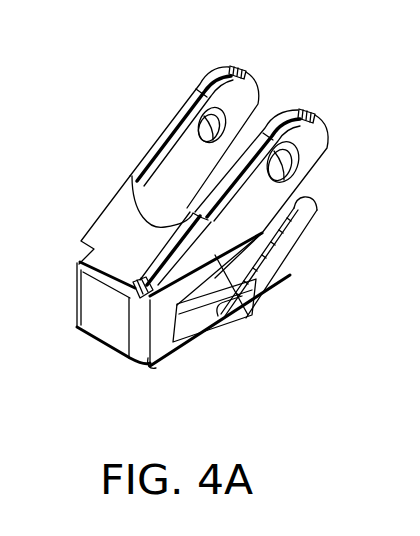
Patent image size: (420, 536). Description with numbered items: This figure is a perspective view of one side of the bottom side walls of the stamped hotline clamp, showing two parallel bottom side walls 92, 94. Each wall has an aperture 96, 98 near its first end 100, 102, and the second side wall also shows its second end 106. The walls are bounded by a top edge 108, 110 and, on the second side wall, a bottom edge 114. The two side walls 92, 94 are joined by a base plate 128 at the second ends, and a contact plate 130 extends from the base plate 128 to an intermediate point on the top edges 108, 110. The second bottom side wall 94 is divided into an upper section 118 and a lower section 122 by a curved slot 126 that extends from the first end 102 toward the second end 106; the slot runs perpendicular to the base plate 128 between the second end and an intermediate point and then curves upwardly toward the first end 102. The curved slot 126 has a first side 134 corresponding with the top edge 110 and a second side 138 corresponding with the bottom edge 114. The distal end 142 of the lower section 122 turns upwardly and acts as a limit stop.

The first bottom side wall 92 is at (163, 127).
The second bottom side wall 94 is at (312, 143).
The aperture 96 is at (215, 122).
The aperture 98 is at (300, 162).
The first end 100 is at (238, 66).
The first end 102 is at (313, 112).
The second end 106 is at (160, 367).
The top edge 108 is at (155, 142).
The top edge 110 is at (262, 122).
The bottom edge 114 is at (240, 345).
The upper section 118 is at (183, 345).
The lower section 122 is at (277, 277).
The curved slot 126 is at (283, 262).
The base plate 128 is at (100, 305).
The contact plate 130 is at (123, 240).
The first side of curved slot 134 is at (203, 320).
The second side of curved slot 138 is at (235, 300).
The distal end of lower section 142 is at (316, 206).